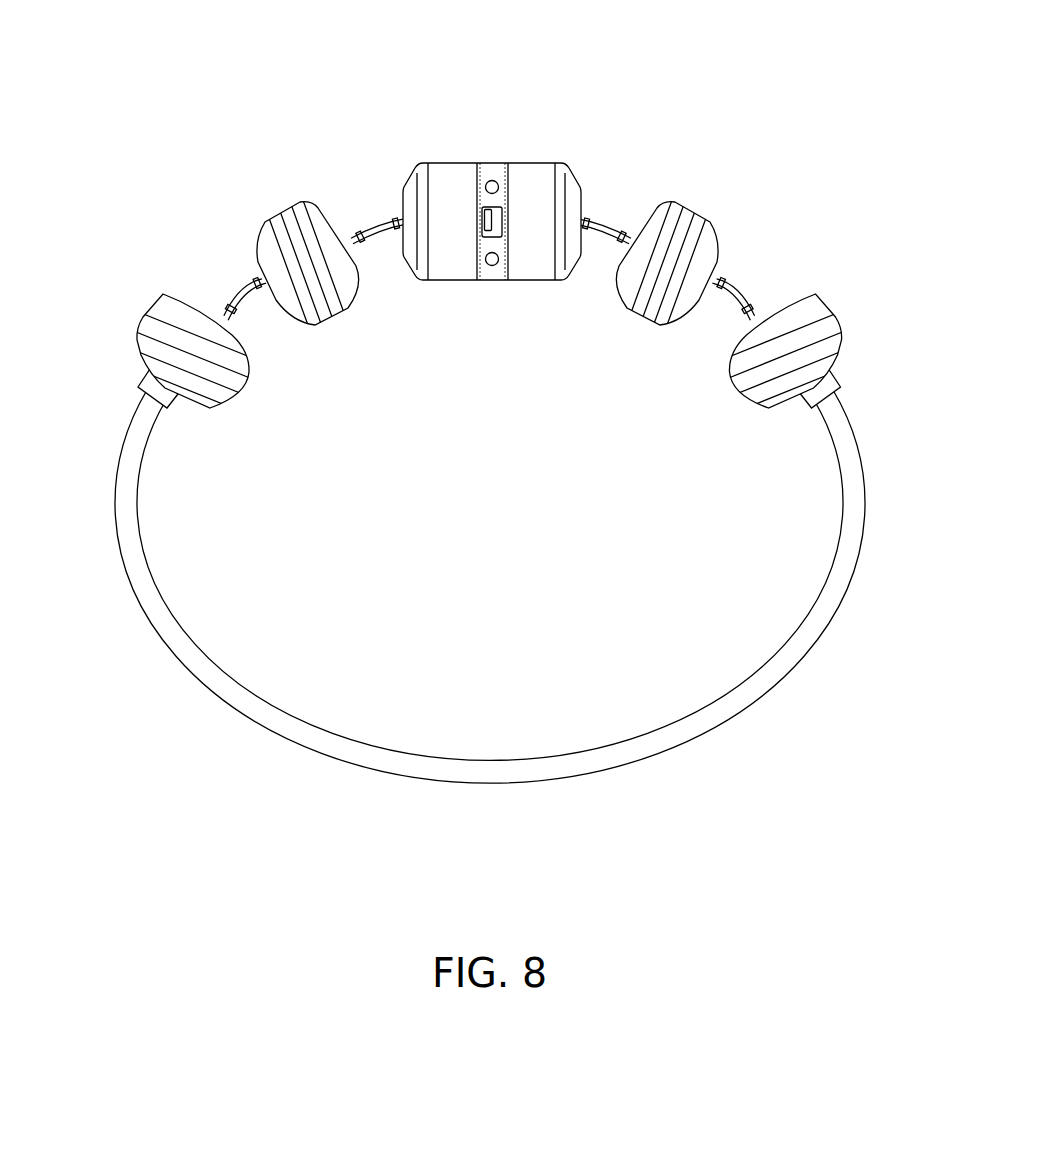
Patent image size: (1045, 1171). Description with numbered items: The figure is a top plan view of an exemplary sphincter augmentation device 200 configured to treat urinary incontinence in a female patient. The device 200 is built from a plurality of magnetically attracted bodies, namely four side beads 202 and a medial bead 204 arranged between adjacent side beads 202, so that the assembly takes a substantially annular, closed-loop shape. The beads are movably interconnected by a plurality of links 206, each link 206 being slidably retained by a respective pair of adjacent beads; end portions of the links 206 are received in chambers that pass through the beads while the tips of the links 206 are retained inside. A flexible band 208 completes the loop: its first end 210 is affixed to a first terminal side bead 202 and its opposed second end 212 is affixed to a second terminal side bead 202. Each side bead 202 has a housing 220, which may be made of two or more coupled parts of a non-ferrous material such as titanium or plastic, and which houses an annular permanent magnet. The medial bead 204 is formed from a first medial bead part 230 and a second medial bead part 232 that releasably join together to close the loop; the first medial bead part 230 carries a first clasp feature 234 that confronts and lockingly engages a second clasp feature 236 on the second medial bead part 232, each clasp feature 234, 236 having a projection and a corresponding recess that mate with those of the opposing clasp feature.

The sphincter augmentation device 200 is at (125, 72).
The side bead 202 is at (141, 316).
The medial bead 204 is at (486, 221).
The link 206 is at (240, 295).
The flexible band 208 is at (288, 741).
The first end 210 is at (142, 395).
The second end 212 is at (840, 396).
The housing 220 is at (233, 392).
The first medial bead part 230 is at (448, 163).
The second medial bead part 232 is at (525, 163).
The first clasp feature 234 is at (497, 202).
The second clasp feature 236 is at (485, 247).